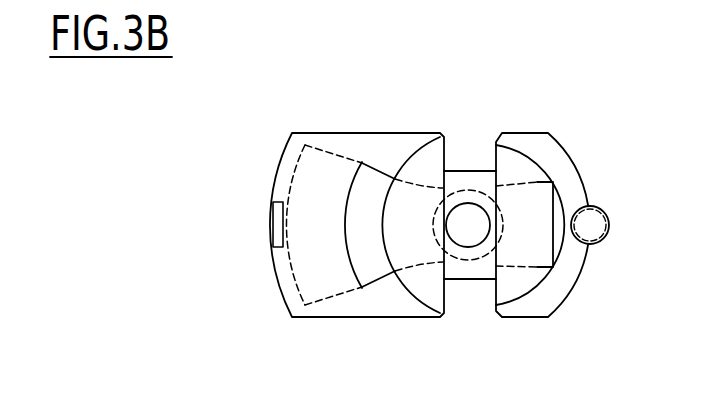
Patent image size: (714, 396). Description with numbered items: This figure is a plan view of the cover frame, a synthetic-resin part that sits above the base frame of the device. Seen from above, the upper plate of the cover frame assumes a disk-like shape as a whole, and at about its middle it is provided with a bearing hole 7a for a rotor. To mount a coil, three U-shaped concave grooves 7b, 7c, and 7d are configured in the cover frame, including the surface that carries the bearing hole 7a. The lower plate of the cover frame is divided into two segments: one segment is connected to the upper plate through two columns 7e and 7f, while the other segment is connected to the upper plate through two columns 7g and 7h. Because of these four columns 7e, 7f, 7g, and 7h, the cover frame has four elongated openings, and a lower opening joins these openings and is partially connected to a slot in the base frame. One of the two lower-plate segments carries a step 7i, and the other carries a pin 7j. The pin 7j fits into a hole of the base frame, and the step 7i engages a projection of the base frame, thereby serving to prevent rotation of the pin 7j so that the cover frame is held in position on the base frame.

The bearing hole 7a is at (468, 213).
The U-shaped concave groove 7b is at (462, 273).
The U-shaped concave groove 7c is at (480, 152).
The U-shaped concave groove 7d is at (473, 297).
The column 7e is at (432, 178).
The column 7f is at (422, 282).
The column 7g is at (513, 170).
The column 7h is at (513, 280).
The step 7i is at (277, 227).
The pin 7j is at (587, 232).